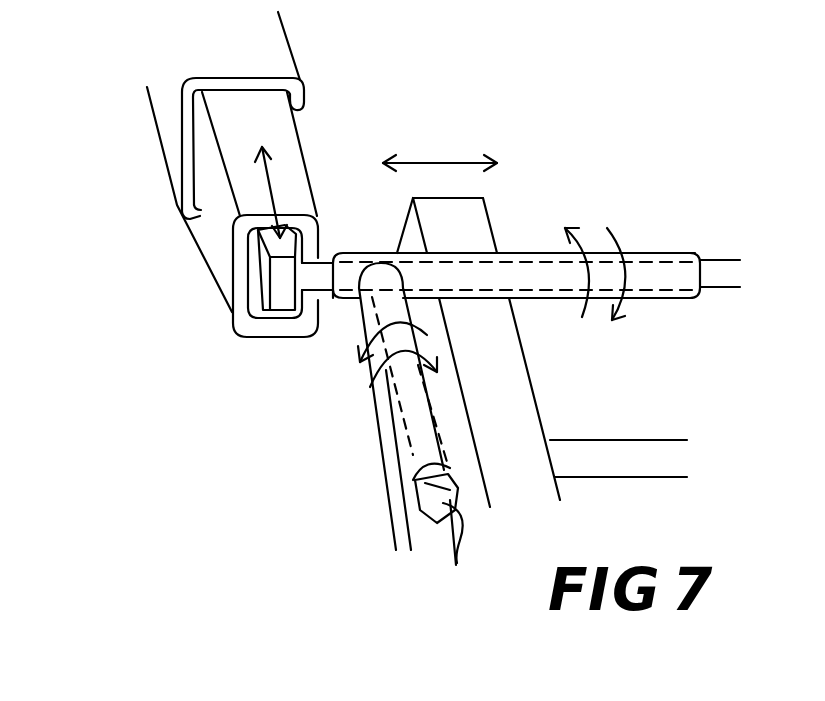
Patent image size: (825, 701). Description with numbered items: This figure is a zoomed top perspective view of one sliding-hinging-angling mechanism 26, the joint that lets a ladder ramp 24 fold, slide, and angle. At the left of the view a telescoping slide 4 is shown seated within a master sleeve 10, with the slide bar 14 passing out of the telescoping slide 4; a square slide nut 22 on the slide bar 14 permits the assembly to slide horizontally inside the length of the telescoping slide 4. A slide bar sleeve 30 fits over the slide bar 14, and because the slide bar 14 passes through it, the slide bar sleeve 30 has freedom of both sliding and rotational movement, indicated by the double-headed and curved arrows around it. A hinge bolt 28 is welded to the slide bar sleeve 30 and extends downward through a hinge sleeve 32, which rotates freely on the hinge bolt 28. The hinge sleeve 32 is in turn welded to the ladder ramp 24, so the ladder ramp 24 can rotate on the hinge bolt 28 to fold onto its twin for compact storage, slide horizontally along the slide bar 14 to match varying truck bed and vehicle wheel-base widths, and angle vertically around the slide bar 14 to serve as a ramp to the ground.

The telescoping slide 4 is at (200, 237).
The master sleeve 10 is at (270, 48).
The slide bar 14 is at (730, 278).
The square slide nut 22 is at (283, 282).
The ladder ramp 24 is at (612, 430).
The sliding-hinging-angling mechanism 26 is at (382, 247).
The hinge bolt 28 is at (457, 563).
The slide bar sleeve 30 is at (653, 250).
The hinge sleeve 32 is at (417, 427).